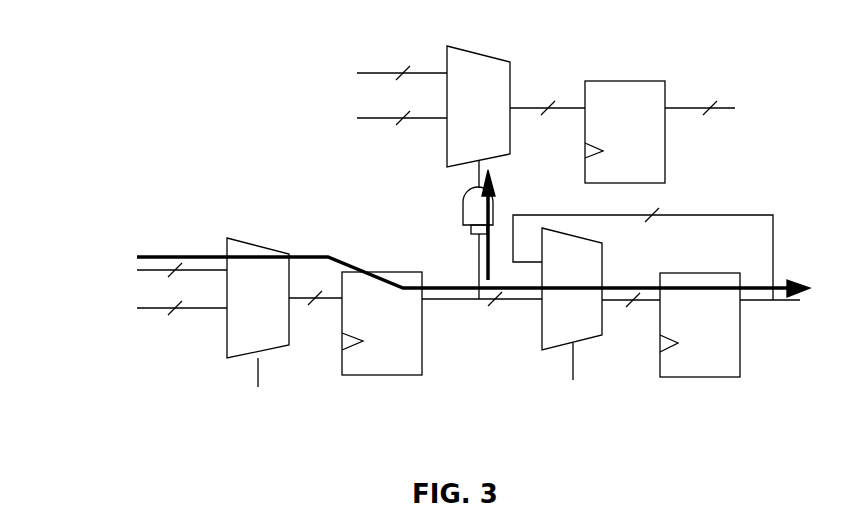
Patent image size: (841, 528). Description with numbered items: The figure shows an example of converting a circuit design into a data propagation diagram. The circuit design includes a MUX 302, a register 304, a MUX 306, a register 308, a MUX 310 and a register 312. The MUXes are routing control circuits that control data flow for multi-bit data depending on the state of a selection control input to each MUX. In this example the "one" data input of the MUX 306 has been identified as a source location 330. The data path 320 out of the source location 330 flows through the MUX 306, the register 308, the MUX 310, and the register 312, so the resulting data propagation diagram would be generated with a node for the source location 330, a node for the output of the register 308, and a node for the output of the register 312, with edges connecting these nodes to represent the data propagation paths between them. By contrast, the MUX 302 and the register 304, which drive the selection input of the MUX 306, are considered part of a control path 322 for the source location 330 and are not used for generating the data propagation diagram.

The MUX 302 is at (467, 46).
The register 304 is at (636, 81).
The MUX 306 is at (238, 238).
The register 308 is at (390, 272).
The MUX 310 is at (555, 350).
The register 312 is at (710, 273).
The data path 320 is at (163, 248).
The control path 322 is at (496, 179).
The source location 330 is at (125, 284).